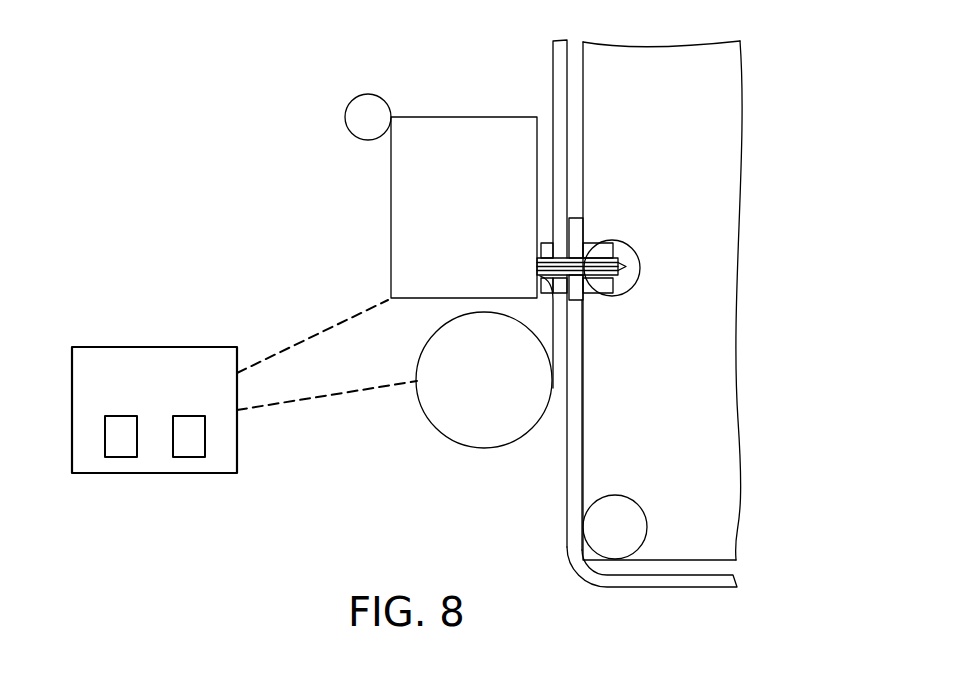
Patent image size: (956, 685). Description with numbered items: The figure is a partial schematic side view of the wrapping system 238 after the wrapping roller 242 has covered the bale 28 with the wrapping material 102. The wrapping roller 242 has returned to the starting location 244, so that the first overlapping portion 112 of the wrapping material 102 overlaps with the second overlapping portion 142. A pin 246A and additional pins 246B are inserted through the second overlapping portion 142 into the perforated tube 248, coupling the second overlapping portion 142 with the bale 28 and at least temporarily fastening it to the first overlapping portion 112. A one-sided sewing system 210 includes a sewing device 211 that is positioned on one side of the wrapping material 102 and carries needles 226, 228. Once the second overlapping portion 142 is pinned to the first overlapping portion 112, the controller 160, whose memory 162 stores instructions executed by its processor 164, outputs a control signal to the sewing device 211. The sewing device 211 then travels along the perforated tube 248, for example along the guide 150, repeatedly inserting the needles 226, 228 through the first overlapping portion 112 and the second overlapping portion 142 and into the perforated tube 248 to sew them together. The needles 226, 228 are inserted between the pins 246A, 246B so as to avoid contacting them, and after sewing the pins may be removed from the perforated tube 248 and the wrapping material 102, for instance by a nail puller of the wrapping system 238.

The wrapping system 238 is at (681, 312).
The guide 150 is at (357, 112).
The one-sided sewing system 210 is at (412, 274).
The sewing device 211 is at (388, 258).
The second overlapping portion 142 is at (546, 306).
The additional pins 246B is at (588, 246).
The needle 228 is at (620, 258).
The needle 226 is at (630, 277).
The perforated tube 248 is at (664, 242).
The pin 246A is at (612, 296).
The first overlapping portion 112 is at (580, 318).
The starting location 244 is at (583, 352).
The bale 28 is at (708, 427).
The wrapping roller 242 is at (440, 422).
The wrapping material 102 is at (683, 579).
The controller 160 is at (152, 411).
The memory 162 is at (120, 458).
The processor 164 is at (190, 458).